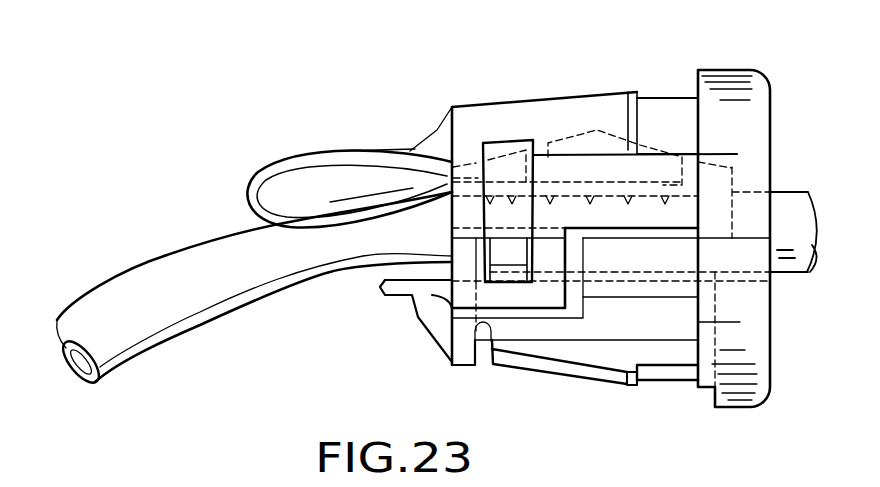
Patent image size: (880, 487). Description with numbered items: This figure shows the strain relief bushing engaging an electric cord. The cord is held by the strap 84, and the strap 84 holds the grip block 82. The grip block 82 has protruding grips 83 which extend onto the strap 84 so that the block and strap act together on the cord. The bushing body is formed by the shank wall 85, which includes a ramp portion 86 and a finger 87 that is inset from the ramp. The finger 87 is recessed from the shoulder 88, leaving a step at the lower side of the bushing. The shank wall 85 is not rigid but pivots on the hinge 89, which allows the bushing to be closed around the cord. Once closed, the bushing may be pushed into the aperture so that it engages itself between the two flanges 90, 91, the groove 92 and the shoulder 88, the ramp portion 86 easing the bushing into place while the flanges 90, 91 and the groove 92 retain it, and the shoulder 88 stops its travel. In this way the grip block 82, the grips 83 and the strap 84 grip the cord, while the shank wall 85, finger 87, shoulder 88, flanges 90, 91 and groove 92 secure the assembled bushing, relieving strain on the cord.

The grip block 82 is at (610, 200).
The protruding grips 83 is at (587, 193).
The strap 84 is at (262, 192).
The shank wall 85 is at (620, 373).
The ramp portion 86 is at (582, 384).
The finger 87 is at (677, 381).
The shoulder 88 is at (641, 381).
The hinge 89 is at (485, 356).
The flange 90 is at (752, 394).
The flange 91 is at (731, 70).
The groove 92 is at (664, 97).